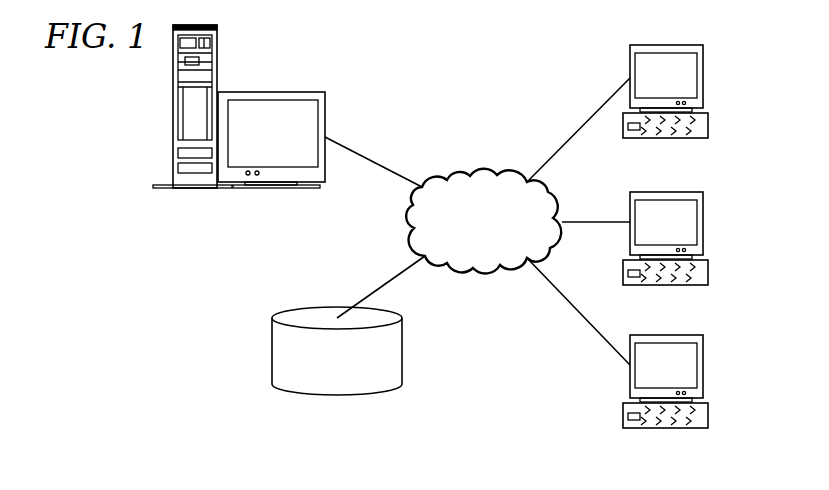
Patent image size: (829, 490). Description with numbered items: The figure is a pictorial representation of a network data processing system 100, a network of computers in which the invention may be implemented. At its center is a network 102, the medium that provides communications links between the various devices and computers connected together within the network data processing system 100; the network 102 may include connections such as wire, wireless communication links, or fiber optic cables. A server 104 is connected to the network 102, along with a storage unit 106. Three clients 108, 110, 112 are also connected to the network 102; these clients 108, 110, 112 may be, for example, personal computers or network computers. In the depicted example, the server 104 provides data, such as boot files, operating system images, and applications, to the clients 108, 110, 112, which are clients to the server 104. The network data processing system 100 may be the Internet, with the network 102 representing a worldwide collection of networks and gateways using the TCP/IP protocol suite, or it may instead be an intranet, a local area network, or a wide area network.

The network data processing system 100 is at (533, 60).
The network 102 is at (458, 173).
The server 104 is at (173, 108).
The storage unit 106 is at (320, 395).
The client 108 is at (703, 78).
The client 110 is at (703, 223).
The client 112 is at (703, 365).